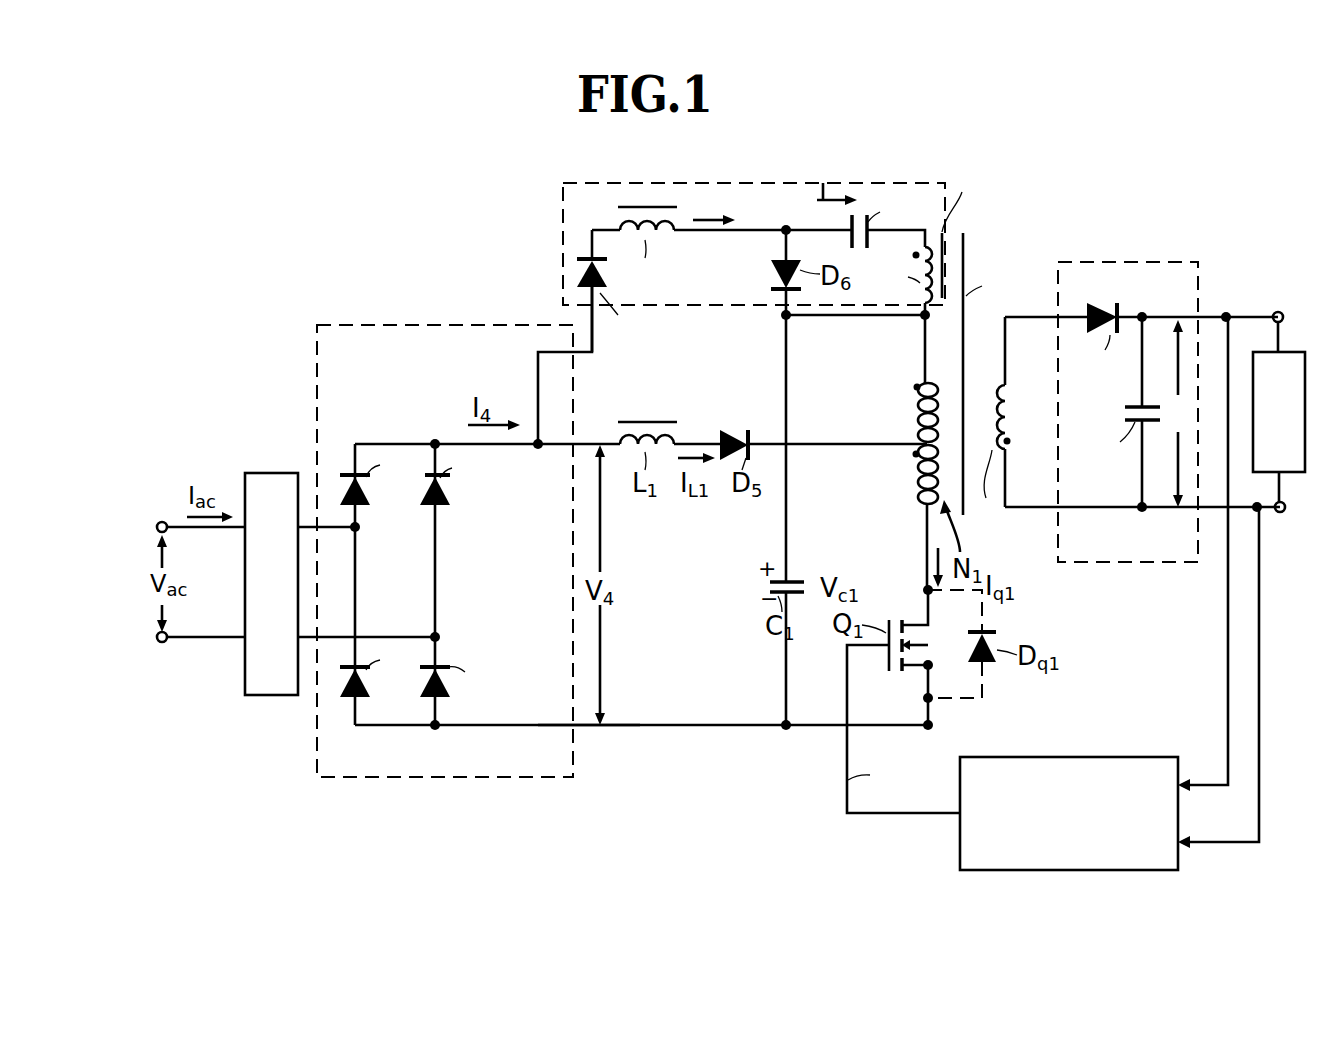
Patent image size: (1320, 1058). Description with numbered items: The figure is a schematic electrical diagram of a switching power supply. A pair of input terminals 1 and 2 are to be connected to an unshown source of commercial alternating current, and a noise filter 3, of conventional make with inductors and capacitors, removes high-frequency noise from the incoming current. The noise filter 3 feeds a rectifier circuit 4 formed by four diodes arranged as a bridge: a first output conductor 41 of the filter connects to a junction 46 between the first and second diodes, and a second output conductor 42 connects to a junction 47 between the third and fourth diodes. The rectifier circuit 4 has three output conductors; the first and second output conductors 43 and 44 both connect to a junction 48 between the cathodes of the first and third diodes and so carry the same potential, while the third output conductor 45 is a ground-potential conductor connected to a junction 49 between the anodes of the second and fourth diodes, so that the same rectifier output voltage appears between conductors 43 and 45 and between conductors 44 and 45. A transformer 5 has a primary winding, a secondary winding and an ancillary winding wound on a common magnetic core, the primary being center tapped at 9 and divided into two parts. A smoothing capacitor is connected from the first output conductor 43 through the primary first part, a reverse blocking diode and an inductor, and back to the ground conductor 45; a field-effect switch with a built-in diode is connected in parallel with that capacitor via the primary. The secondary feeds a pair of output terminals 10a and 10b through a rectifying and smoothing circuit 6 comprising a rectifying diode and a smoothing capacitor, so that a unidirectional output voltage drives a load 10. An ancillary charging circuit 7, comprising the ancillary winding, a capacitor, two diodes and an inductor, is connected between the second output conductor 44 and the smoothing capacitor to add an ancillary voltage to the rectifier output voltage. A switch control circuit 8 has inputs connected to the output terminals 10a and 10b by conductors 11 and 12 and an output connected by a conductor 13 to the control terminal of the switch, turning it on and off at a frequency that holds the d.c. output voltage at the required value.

The input terminal 1 is at (161, 522).
The input terminal 2 is at (164, 644).
The noise filter 3 is at (263, 470).
The rectifier circuit 4 is at (364, 325).
The transformer 5 is at (978, 236).
The rectifying and smoothing circuit 6 is at (1122, 262).
The ancillary charging circuit 7 is at (563, 253).
The switch control circuit 8 is at (1075, 757).
The center tap 9 is at (918, 444).
The load 10 is at (1274, 348).
The output terminal 10a is at (1278, 312).
The output terminal 10b is at (1281, 512).
The conductor 11 is at (1228, 715).
The conductor 12 is at (1259, 720).
The conductor 13 is at (847, 774).
The first output conductor 41 is at (314, 522).
The second output conductor 42 is at (312, 642).
The first output conductor 43 is at (577, 444).
The second output conductor 44 is at (576, 352).
The third output conductor 45 is at (580, 725).
The junction 46 is at (358, 530).
The junction 47 is at (432, 634).
The junction 48 is at (436, 441).
The junction 49 is at (436, 728).